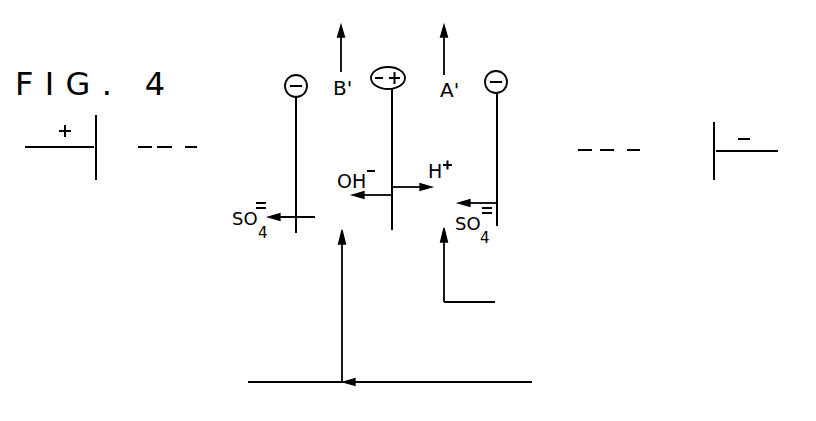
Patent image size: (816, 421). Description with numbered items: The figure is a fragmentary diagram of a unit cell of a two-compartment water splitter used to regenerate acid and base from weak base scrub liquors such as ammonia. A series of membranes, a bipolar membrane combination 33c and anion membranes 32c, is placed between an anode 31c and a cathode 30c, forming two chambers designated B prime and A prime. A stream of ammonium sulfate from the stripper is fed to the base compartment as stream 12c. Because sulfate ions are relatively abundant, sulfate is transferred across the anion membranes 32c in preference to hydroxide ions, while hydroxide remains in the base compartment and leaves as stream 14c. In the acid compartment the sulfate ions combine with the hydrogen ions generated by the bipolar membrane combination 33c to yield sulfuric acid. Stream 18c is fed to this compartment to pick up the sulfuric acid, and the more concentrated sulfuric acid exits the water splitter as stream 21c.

The anode 31c is at (82, 154).
The cathode 30c is at (730, 162).
The anion membrane 32c is at (298, 155).
The bipolar membrane combination 33c is at (398, 150).
The base product stream 14c is at (341, 55).
The concentrated sulfuric acid stream 21c is at (444, 55).
The sulfuric acid pickup stream 18c is at (446, 282).
The ammonium sulfate feed stream 12c is at (397, 381).